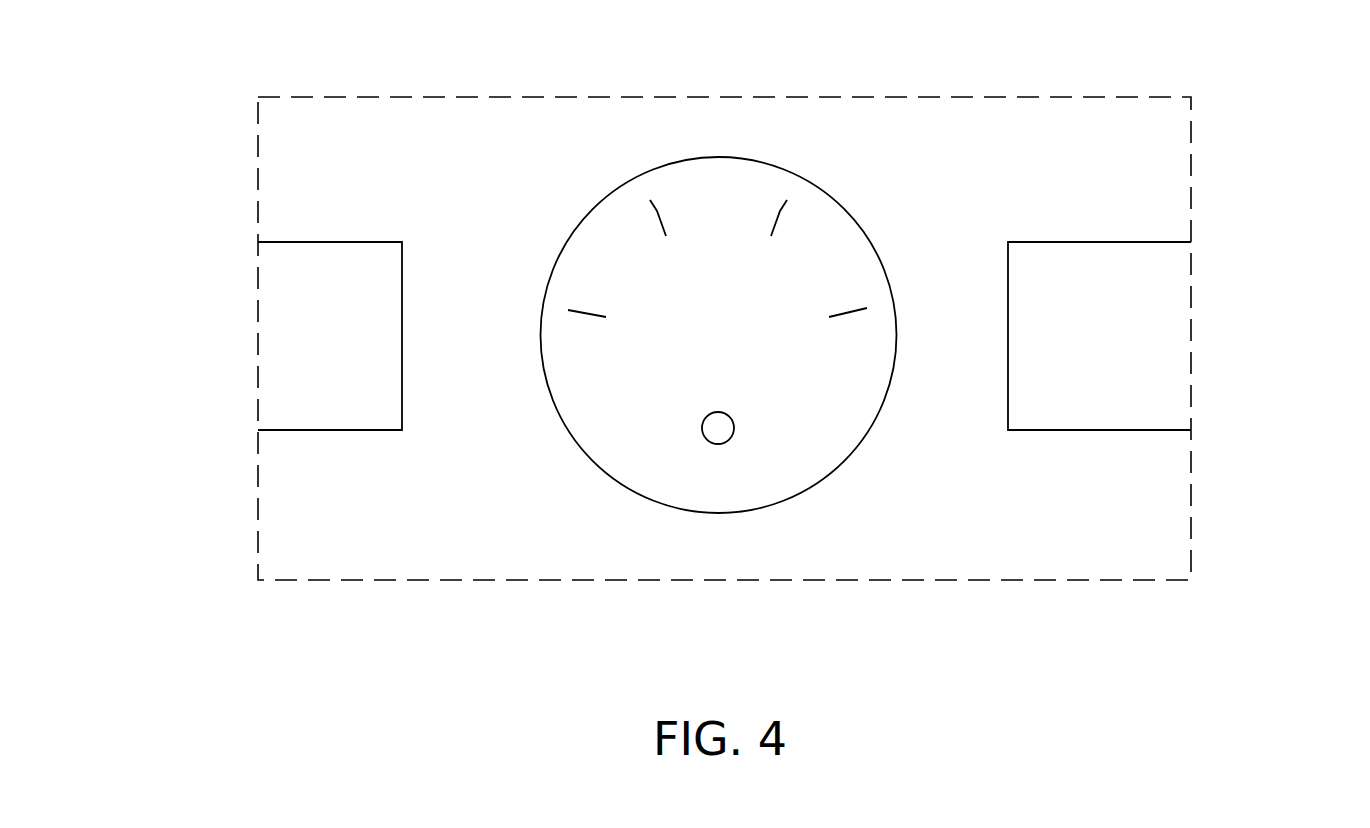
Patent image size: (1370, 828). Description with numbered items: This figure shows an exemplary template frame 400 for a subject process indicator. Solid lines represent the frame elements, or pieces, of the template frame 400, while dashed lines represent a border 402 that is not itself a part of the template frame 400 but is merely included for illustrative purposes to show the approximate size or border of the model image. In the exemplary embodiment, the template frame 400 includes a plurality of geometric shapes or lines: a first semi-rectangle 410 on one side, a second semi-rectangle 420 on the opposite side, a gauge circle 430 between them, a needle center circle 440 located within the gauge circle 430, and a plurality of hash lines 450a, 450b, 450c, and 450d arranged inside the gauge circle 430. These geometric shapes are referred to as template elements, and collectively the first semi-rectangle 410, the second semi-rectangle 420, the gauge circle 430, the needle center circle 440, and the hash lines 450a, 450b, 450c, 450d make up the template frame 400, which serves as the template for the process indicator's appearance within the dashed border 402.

The template frame 400 is at (1004, 66).
The border 402 is at (1191, 508).
The first semi-rectangle 410 is at (332, 242).
The second semi-rectangle 420 is at (1112, 242).
The gauge circle 430 is at (718, 157).
The needle center circle 440 is at (706, 441).
The hash line 450a is at (588, 312).
The hash line 450b is at (663, 202).
The hash line 450c is at (782, 208).
The hash line 450d is at (848, 312).